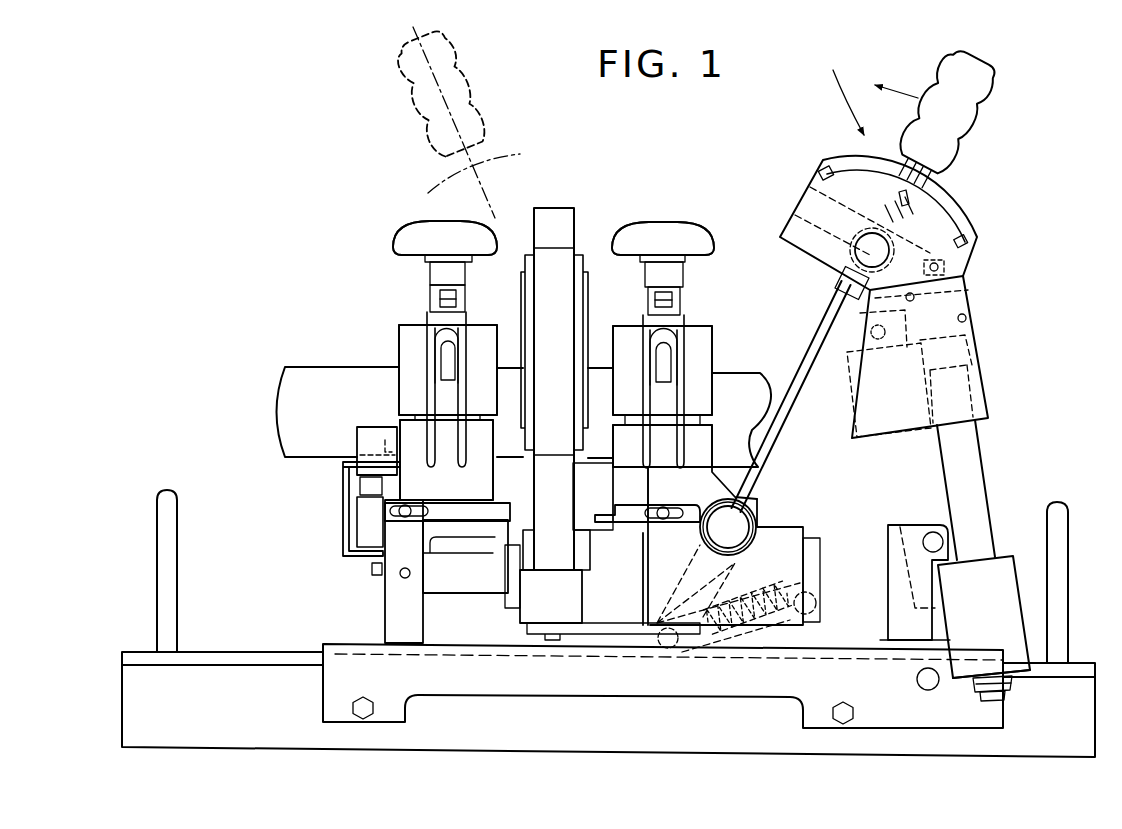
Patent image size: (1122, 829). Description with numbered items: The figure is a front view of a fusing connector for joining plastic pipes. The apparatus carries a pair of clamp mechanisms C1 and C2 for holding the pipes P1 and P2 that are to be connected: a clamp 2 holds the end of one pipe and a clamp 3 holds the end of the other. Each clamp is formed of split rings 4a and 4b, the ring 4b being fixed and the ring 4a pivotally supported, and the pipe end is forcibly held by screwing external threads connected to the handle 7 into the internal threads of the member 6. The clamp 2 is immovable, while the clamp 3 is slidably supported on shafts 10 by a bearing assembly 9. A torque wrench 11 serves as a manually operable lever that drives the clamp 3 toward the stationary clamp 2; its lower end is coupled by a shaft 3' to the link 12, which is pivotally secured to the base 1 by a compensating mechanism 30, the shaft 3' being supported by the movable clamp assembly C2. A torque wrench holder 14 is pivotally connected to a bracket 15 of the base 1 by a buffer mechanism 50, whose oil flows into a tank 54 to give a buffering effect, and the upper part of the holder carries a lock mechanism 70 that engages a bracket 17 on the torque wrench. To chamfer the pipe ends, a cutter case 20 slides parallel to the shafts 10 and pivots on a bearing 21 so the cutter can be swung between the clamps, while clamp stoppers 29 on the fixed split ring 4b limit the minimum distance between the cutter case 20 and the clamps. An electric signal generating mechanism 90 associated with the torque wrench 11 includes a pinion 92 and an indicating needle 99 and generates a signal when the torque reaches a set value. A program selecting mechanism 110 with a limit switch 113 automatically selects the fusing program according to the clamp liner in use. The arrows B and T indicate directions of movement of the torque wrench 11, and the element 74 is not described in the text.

The base 1 is at (608, 683).
The clamp 2 is at (399, 345).
The clamp 3 is at (685, 475).
The shaft 3' is at (784, 411).
The split ring 4a is at (401, 338).
The split ring 4b is at (405, 440).
The member 6 is at (430, 385).
The handle 7 is at (421, 226).
The bearing assembly 9 is at (800, 536).
The shafts 10 is at (457, 592).
The torque wrench 11 is at (975, 127).
The link 12 is at (683, 575).
The torque wrench holder 14 is at (993, 465).
The bracket 15 is at (897, 527).
The bracket 17 is at (960, 258).
The cutter case 20 is at (578, 253).
The bearing 21 is at (511, 598).
The clamp stoppers 29 is at (496, 504).
The compensating mechanism 30 is at (791, 620).
The buffer mechanism 50 is at (1018, 540).
The tank 54 is at (1020, 637).
The lock mechanism 70 is at (1005, 349).
The carrier plate 74 is at (895, 420).
The electric signal generating mechanism 90 is at (990, 226).
The pinion 92 is at (852, 258).
The indicating needle 99 is at (908, 202).
The program selecting mechanism 110 is at (338, 488).
The limit switch 113 is at (338, 556).
The direction of handle movement B is at (905, 92).
The direction of tilting T is at (842, 92).
The clamp mechanism C1 is at (372, 262).
The clamp mechanism C2 is at (638, 222).
The pipe P1 is at (303, 382).
The pipe P2 is at (760, 382).